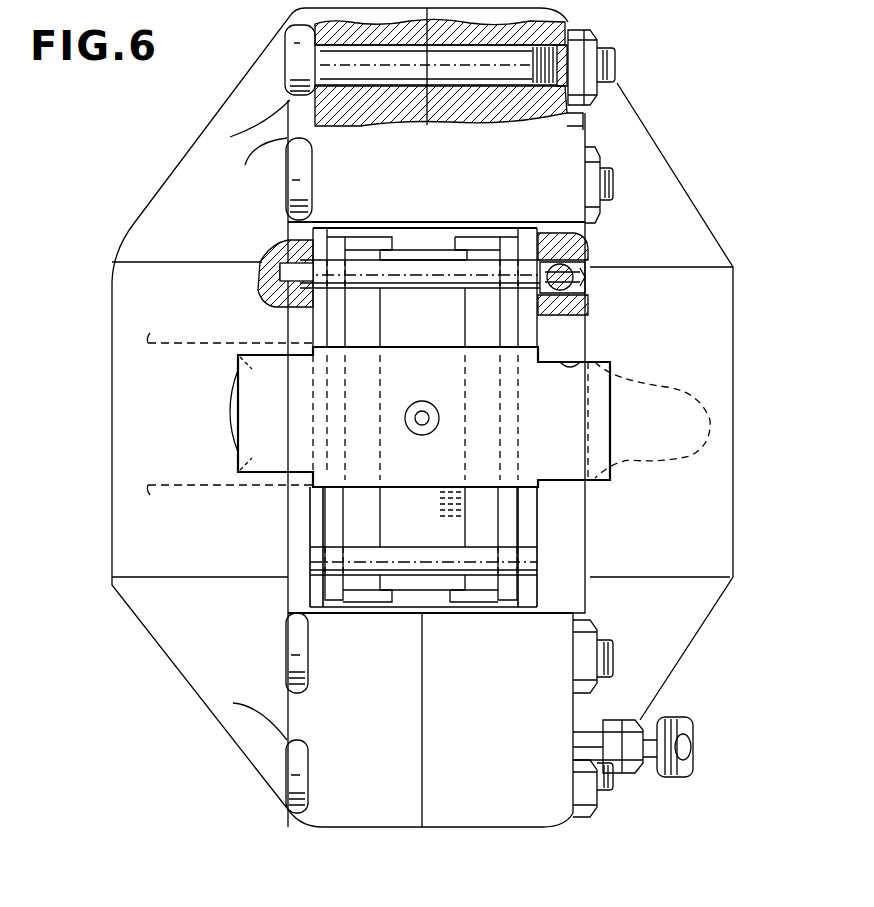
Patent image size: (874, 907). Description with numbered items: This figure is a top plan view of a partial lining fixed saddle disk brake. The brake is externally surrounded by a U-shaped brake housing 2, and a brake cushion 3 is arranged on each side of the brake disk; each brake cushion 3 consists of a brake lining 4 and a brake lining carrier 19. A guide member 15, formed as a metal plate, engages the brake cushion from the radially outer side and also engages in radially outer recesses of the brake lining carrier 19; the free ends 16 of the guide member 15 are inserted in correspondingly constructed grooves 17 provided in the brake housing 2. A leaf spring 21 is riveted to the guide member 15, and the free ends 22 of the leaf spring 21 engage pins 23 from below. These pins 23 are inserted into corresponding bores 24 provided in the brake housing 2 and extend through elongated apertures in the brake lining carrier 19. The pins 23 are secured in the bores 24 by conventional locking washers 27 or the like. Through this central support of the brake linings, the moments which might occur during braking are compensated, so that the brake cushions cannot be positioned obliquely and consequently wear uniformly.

The brake housing 2 is at (686, 216).
The brake cushion 3 is at (493, 247).
The brake lining 4 is at (365, 245).
The guide member 15 is at (426, 488).
The free ends 16 is at (597, 440).
The grooves 17 is at (585, 350).
The brake lining carrier 19 is at (333, 311).
The leaf spring 21 is at (440, 530).
The free ends 22 is at (415, 250).
The pins 23 is at (437, 290).
The bores 24 is at (592, 265).
The locking washers 27 is at (590, 298).